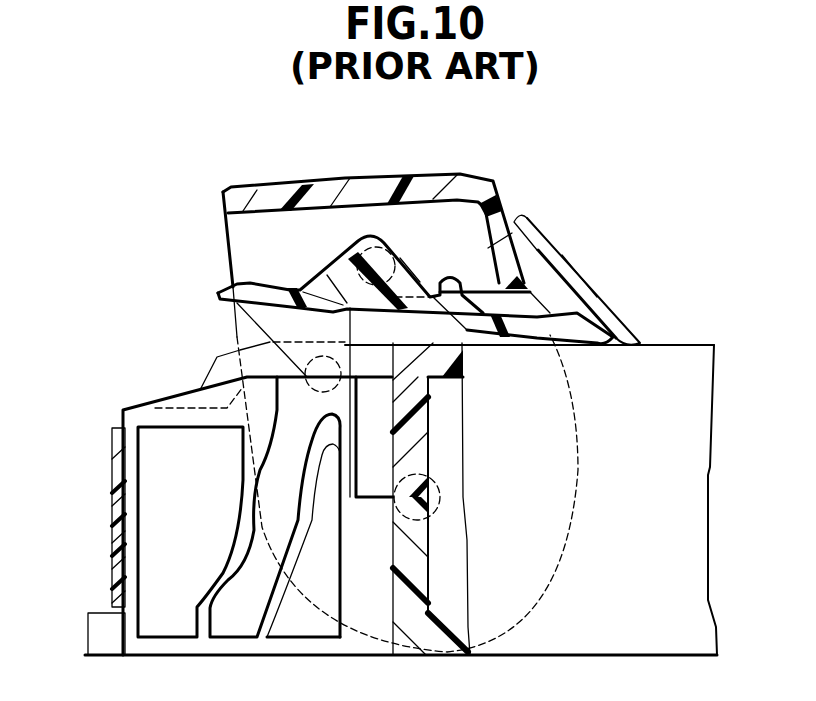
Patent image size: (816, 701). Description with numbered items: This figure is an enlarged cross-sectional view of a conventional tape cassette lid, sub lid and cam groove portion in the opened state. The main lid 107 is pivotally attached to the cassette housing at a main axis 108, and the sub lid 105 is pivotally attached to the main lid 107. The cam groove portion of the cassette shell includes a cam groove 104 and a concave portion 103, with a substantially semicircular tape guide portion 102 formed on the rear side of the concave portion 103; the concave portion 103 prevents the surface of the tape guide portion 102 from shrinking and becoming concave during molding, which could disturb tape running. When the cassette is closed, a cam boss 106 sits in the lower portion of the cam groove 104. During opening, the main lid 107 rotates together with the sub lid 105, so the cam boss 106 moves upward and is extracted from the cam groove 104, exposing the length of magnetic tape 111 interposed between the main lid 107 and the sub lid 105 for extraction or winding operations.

The tape guide portion 102 is at (130, 551).
The concave portion 103 is at (190, 567).
The cam groove 104 is at (252, 587).
The sub lid 105 is at (590, 247).
The cam boss 106 is at (313, 360).
The main lid 107 is at (380, 170).
The main axis 108 is at (440, 497).
The magnetic tape 111 is at (110, 470).